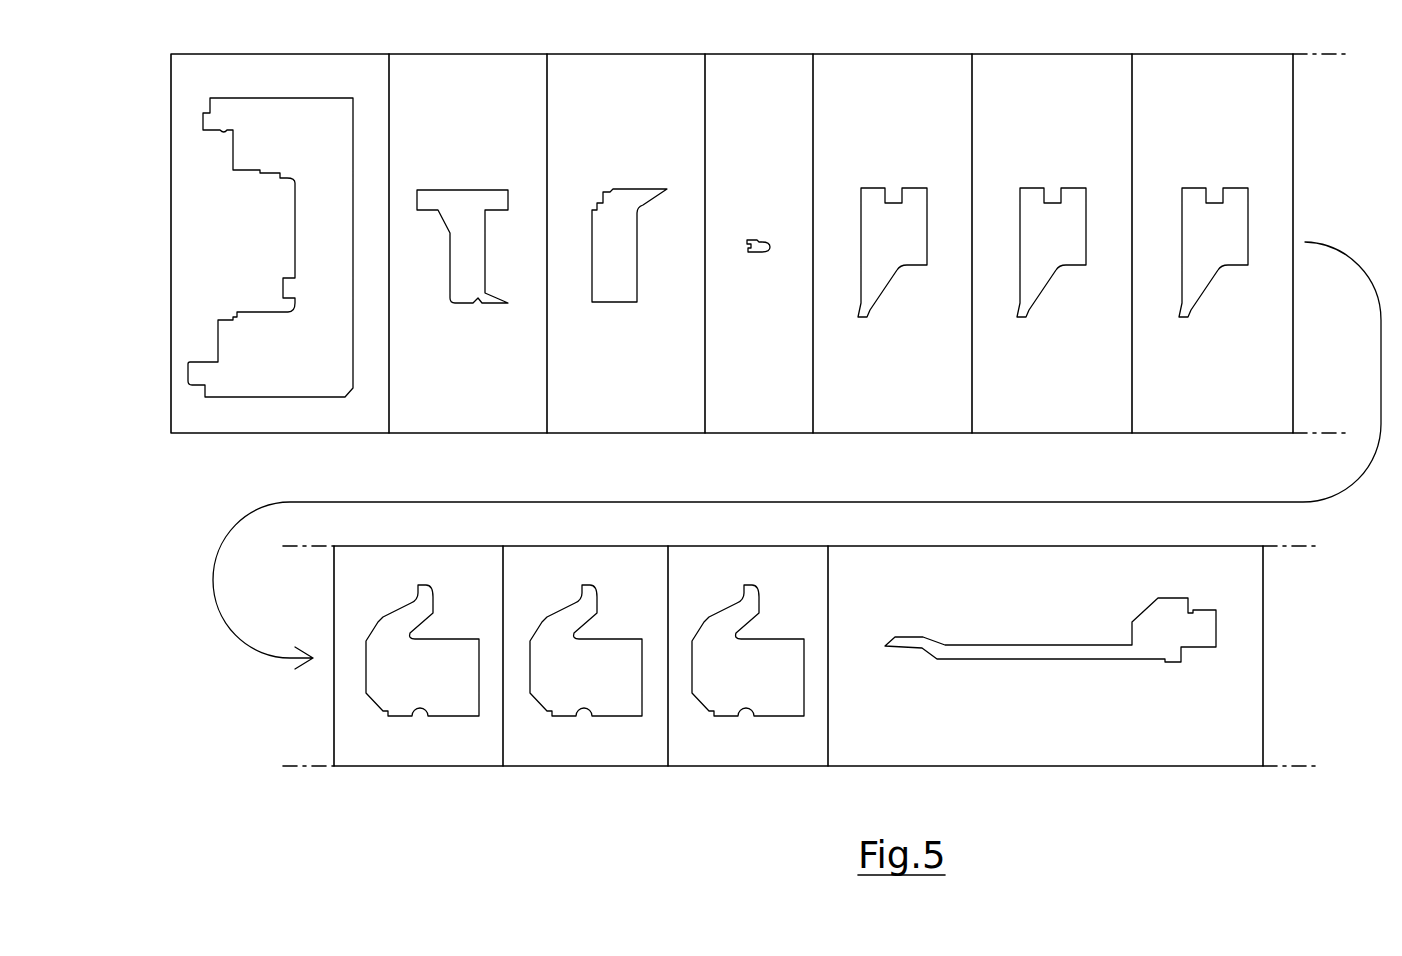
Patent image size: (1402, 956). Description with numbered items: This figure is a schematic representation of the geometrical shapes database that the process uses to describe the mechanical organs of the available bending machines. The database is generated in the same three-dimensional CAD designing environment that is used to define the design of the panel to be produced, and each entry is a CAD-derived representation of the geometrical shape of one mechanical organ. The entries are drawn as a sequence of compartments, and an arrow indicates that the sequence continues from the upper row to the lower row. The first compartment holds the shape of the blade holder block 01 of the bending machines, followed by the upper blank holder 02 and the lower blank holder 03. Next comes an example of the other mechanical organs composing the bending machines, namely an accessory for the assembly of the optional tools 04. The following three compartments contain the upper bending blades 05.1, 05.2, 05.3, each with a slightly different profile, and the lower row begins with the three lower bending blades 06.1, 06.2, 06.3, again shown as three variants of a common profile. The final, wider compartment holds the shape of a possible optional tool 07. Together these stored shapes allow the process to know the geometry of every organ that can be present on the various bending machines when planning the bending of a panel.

The blade holder block 01 is at (277, 434).
The upper blank holder 02 is at (467, 434).
The lower blank holder 03 is at (618, 434).
The accessory for the assembly of the optional tools 04 is at (753, 434).
The upper bending blade 05.1 is at (897, 434).
The upper bending blade 05.2 is at (1059, 434).
The upper bending blade 05.3 is at (1215, 434).
The lower bending blade 06.1 is at (415, 767).
The lower bending blade 06.2 is at (583, 767).
The lower bending blade 06.3 is at (748, 767).
The optional tool 07 is at (1053, 767).